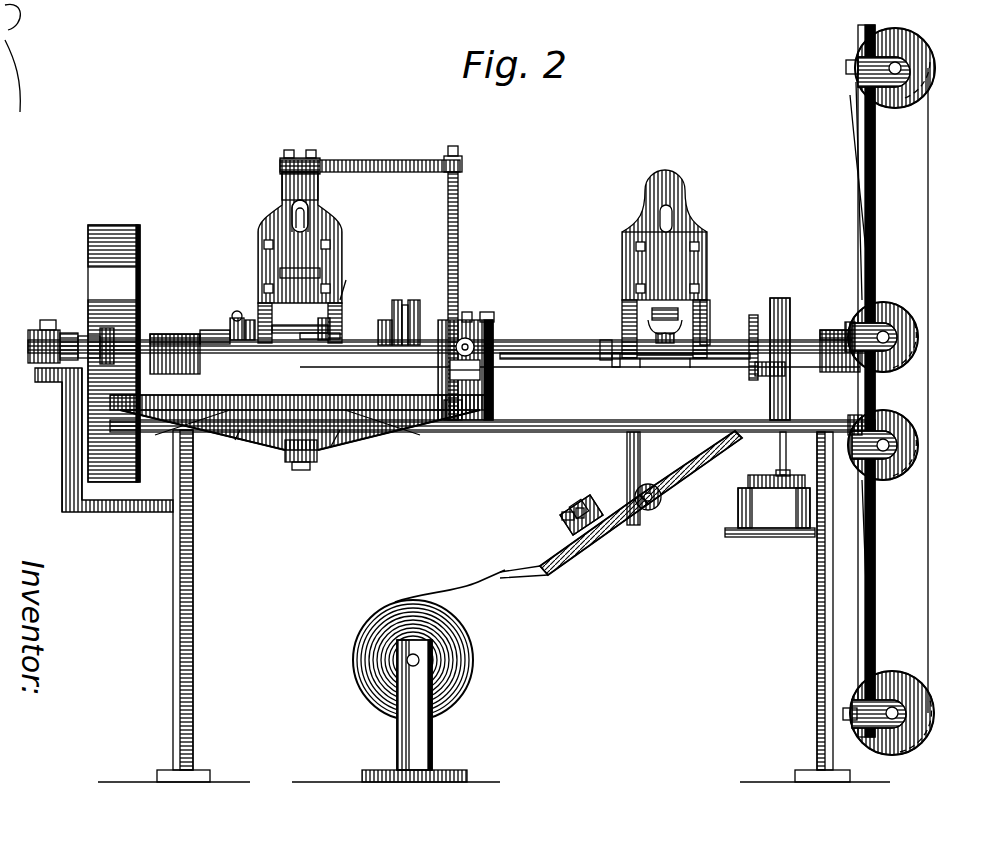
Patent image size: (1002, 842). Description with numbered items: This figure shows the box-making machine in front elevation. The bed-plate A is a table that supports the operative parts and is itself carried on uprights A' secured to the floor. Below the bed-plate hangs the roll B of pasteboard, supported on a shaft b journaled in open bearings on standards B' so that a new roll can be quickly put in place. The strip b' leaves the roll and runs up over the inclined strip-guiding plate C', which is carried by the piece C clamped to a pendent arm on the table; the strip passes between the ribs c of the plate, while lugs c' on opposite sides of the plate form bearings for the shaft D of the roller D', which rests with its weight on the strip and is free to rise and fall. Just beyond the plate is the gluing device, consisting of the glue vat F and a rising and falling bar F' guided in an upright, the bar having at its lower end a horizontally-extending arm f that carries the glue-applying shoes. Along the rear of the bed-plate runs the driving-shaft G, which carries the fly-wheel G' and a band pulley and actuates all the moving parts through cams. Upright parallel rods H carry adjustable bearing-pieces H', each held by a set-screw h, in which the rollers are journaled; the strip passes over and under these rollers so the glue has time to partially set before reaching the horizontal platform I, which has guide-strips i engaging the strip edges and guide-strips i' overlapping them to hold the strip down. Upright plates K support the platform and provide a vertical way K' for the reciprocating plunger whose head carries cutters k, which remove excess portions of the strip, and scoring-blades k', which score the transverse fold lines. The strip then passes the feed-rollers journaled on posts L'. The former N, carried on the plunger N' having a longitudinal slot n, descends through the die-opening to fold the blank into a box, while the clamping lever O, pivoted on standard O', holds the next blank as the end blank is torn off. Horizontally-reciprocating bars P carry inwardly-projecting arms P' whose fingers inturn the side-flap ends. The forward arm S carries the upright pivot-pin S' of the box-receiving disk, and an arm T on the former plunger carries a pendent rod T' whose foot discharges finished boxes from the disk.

The bed-plate A is at (492, 437).
The uprights A' is at (503, 606).
The roll B is at (422, 660).
The standards B' is at (414, 711).
The shaft b is at (413, 673).
The strip b' is at (675, 490).
The piece C is at (651, 506).
The inclined strip-guiding plate C' is at (574, 536).
The ribs c is at (691, 467).
The lugs c' is at (554, 513).
The shaft D is at (562, 521).
The roller D' is at (567, 498).
The glue-containing vat F is at (763, 505).
The rising and falling bar F' is at (763, 453).
The horizontally-extending arm f is at (786, 465).
The driving-shaft G is at (449, 341).
The fly-wheel G' is at (903, 390).
The upright parallel rods H is at (865, 381).
The bearing-pieces H' is at (877, 399).
The set-screw h is at (845, 68).
The platform I is at (566, 360).
The guide-strips i is at (611, 367).
The guide-strips i' is at (604, 338).
The upright parallel plates K is at (651, 295).
The vertical way K' is at (716, 316).
The cutters k is at (661, 337).
The scoring-blades k' is at (690, 323).
The posts L' is at (474, 370).
The former N is at (300, 246).
The plunger N' is at (316, 186).
The longitudinal slot n is at (308, 218).
The lever O is at (399, 312).
The standard O' is at (384, 317).
The horizontally-reciprocating bars P is at (301, 422).
The inwardly-projecting arms P' is at (287, 434).
The arm S is at (300, 444).
The upright pivot-pin S' is at (301, 463).
The arm T is at (370, 156).
The pendent rod T' is at (462, 283).